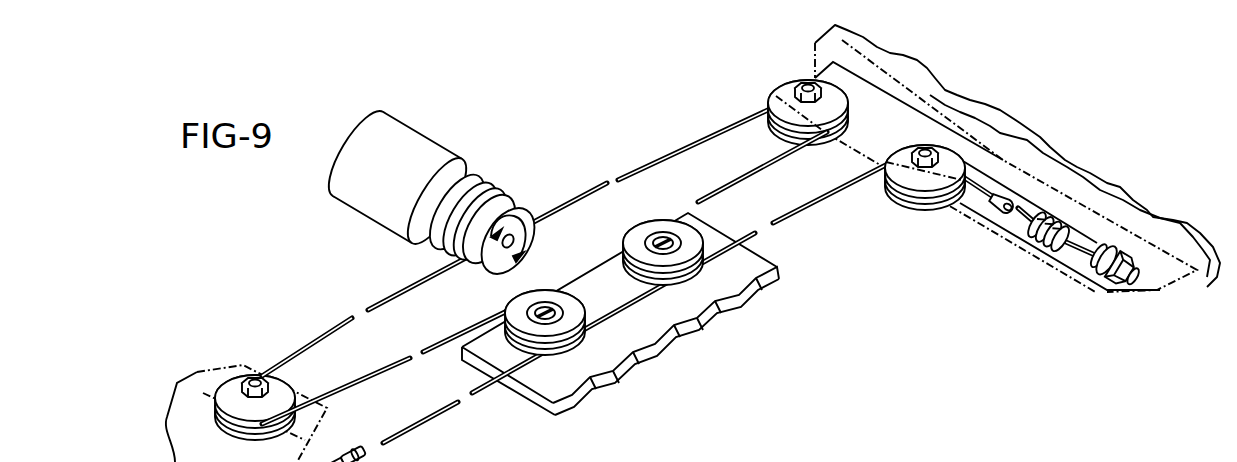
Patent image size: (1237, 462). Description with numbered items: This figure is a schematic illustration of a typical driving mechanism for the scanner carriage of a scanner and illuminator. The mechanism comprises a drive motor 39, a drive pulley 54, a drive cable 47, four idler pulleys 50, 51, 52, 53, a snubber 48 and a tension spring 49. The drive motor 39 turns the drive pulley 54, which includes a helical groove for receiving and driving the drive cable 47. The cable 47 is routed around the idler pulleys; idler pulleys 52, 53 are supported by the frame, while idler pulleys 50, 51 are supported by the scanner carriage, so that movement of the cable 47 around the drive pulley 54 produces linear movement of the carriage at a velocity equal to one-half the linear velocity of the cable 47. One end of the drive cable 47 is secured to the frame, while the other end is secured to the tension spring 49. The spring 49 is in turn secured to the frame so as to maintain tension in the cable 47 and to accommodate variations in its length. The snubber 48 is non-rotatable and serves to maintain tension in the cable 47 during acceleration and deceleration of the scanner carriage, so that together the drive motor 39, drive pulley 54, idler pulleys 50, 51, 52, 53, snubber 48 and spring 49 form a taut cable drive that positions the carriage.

The drive motor 39 is at (458, 138).
The drive cable 47 is at (635, 178).
The snubber 48 is at (912, 205).
The tension spring 49 is at (1031, 234).
The idler pulley 50 is at (654, 283).
The idler pulley 51 is at (578, 305).
The idler pulley 52 is at (778, 123).
The idler pulley 53 is at (289, 380).
The drive pulley 54 is at (516, 208).